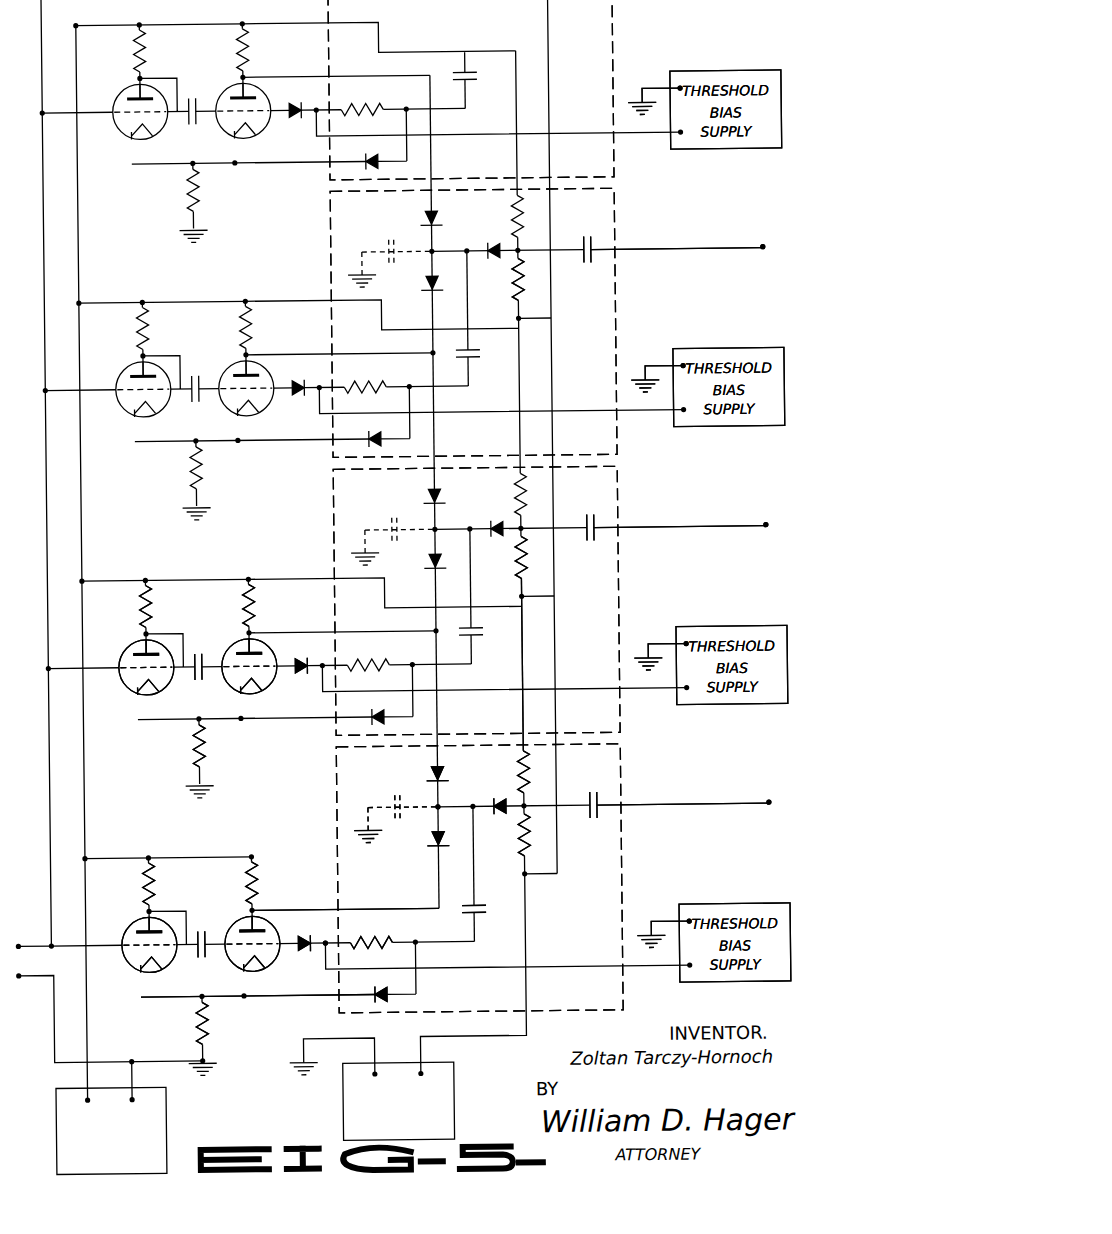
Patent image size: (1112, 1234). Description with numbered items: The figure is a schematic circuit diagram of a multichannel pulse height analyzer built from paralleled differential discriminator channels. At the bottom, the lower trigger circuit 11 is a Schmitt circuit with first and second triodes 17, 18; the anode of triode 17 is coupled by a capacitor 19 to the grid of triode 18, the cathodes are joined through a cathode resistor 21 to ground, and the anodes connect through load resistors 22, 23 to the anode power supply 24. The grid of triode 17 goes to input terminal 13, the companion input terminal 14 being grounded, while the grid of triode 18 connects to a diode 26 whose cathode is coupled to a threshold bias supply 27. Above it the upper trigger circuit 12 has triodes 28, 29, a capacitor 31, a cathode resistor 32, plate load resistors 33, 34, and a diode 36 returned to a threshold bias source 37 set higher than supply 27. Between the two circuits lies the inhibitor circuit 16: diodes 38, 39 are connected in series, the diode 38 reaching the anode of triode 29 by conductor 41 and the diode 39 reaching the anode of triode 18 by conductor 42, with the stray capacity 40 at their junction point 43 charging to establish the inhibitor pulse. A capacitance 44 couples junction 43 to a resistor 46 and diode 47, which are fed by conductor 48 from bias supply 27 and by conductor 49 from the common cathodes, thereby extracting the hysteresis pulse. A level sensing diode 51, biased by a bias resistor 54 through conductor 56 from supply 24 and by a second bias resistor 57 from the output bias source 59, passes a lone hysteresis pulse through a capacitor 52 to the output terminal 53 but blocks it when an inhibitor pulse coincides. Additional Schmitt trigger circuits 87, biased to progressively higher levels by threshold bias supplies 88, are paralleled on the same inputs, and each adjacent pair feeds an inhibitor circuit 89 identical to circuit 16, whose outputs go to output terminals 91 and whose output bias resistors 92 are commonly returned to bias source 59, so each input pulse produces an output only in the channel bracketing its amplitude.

The lower trigger circuit 11 is at (230, 842).
The upper trigger circuit 12 is at (236, 556).
The input terminal 13 is at (9, 944).
The input terminal 14 is at (9, 978).
The inhibitor circuit 16 is at (614, 872).
The first triode 17 is at (120, 927).
The second triode 18 is at (226, 923).
The capacitor 19 is at (190, 961).
The cathode resistor 21 is at (197, 1035).
The load resistor 22 is at (147, 892).
The load resistor 23 is at (250, 893).
The anode power supply 24 is at (155, 1134).
The diode 26 is at (294, 956).
The threshold bias supply 27 is at (716, 911).
The first triode 28 is at (121, 650).
The second triode 29 is at (225, 650).
The capacitor 31 is at (189, 680).
The cathode resistor 32 is at (197, 752).
The plate load resistor 33 is at (145, 610).
The plate load resistor 34 is at (248, 611).
The diode 36 is at (295, 678).
The threshold bias source 37 is at (733, 712).
The diode 38 is at (423, 776).
The diode 39 is at (423, 844).
The stray capacity 40 is at (384, 804).
The conductor 41 is at (431, 741).
The conductor 42 is at (354, 911).
The junction point 43 is at (432, 810).
The capacitance 44 is at (477, 919).
The resistor 46 is at (375, 941).
The diode 47 is at (378, 1001).
The conductor 48 is at (318, 945).
The conductor 49 is at (318, 1000).
The level sensing diode 51 is at (497, 820).
The capacitor 52 is at (580, 268).
The output terminal 53 is at (762, 808).
The bias resistor 54 is at (510, 779).
The conductor 56 is at (515, 746).
The second bias resistor 57 is at (509, 858).
The output bias source 59 is at (331, 1112).
The additional Schmitt trigger circuits 87 is at (289, 191).
The threshold bias supplies 88 is at (729, 157).
The inhibitor circuit 89 is at (615, 44).
The output terminals 91 is at (760, 250).
The output bias resistors 92 is at (510, 282).